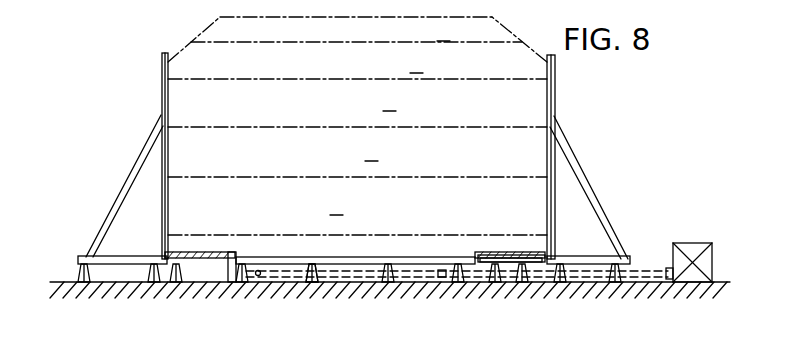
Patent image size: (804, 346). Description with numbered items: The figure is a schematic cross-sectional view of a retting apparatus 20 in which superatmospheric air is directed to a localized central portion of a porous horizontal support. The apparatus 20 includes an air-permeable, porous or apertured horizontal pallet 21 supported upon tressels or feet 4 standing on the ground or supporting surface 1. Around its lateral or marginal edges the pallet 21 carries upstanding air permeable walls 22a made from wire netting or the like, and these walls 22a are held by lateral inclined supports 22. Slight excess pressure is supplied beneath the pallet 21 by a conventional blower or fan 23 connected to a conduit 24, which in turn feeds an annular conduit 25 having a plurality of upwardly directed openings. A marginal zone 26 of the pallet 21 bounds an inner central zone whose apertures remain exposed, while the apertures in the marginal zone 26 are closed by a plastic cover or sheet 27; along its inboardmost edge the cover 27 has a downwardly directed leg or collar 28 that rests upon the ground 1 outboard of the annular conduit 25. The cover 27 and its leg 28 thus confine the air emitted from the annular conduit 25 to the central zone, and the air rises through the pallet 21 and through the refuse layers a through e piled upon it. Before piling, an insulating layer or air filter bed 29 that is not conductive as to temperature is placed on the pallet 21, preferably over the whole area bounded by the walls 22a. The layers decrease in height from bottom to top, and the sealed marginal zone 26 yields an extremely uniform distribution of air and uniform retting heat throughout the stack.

The apparatus 20 is at (138, 64).
The air permeable walls 22a is at (163, 100).
The lateral inclined supports 22 is at (135, 196).
The ground or supporting surface 1 is at (430, 268).
The horizontal support or pallet 21 is at (182, 272).
The tressels or feet 4 is at (312, 270).
The marginal zone 26 is at (205, 266).
The cover or sheet 27 is at (494, 252).
The insulating layer or air filter bed 29 is at (512, 252).
The leg or collar 28 is at (231, 272).
The conduit 24 is at (653, 272).
The annular conduit 25 is at (447, 276).
The blower or fan 23 is at (692, 243).